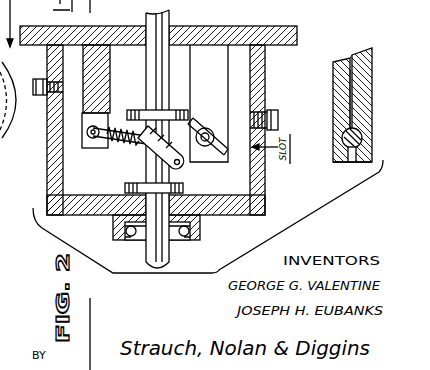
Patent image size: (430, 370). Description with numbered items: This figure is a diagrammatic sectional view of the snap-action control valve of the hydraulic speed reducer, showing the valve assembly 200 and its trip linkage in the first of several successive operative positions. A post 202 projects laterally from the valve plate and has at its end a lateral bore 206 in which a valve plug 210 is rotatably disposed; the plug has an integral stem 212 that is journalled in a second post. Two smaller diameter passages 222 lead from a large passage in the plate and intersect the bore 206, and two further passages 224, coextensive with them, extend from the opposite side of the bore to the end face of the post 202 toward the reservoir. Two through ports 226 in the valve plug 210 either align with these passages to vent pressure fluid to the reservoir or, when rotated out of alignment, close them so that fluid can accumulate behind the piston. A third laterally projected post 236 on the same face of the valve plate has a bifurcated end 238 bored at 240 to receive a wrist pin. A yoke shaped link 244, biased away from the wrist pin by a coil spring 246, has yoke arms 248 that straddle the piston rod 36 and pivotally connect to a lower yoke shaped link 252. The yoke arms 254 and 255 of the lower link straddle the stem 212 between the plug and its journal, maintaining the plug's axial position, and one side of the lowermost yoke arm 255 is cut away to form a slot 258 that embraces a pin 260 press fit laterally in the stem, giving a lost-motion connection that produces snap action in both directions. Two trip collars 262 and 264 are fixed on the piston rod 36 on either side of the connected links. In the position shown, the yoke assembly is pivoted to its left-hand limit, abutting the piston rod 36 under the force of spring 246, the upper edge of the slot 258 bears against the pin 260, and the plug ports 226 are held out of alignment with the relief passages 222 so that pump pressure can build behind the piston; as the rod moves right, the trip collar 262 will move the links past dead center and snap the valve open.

The valve assembly 200 is at (268, 202).
The post 202 is at (334, 98).
The lateral bore 206 is at (372, 110).
The valve plug 210 is at (346, 142).
The stem 212 is at (160, 134).
The passages 222 is at (341, 61).
The passages 224 is at (350, 162).
The through ports 226 is at (338, 133).
The third laterally projected post 236 is at (112, 110).
The bifurcated end 238 is at (83, 152).
The bore 240 is at (77, 110).
The yoke shaped link 244 is at (128, 157).
The coil spring 246 is at (111, 155).
The yoke arms 248 is at (167, 205).
The lower yoke shaped link 252 is at (189, 163).
The yoke arm 254 is at (191, 113).
The yoke arm 255 is at (230, 128).
The slot 258 is at (236, 127).
The pin 260 is at (214, 148).
The trip collar 262 is at (207, 217).
The trip collar 264 is at (166, 107).
The piston rod 36 is at (147, 73).